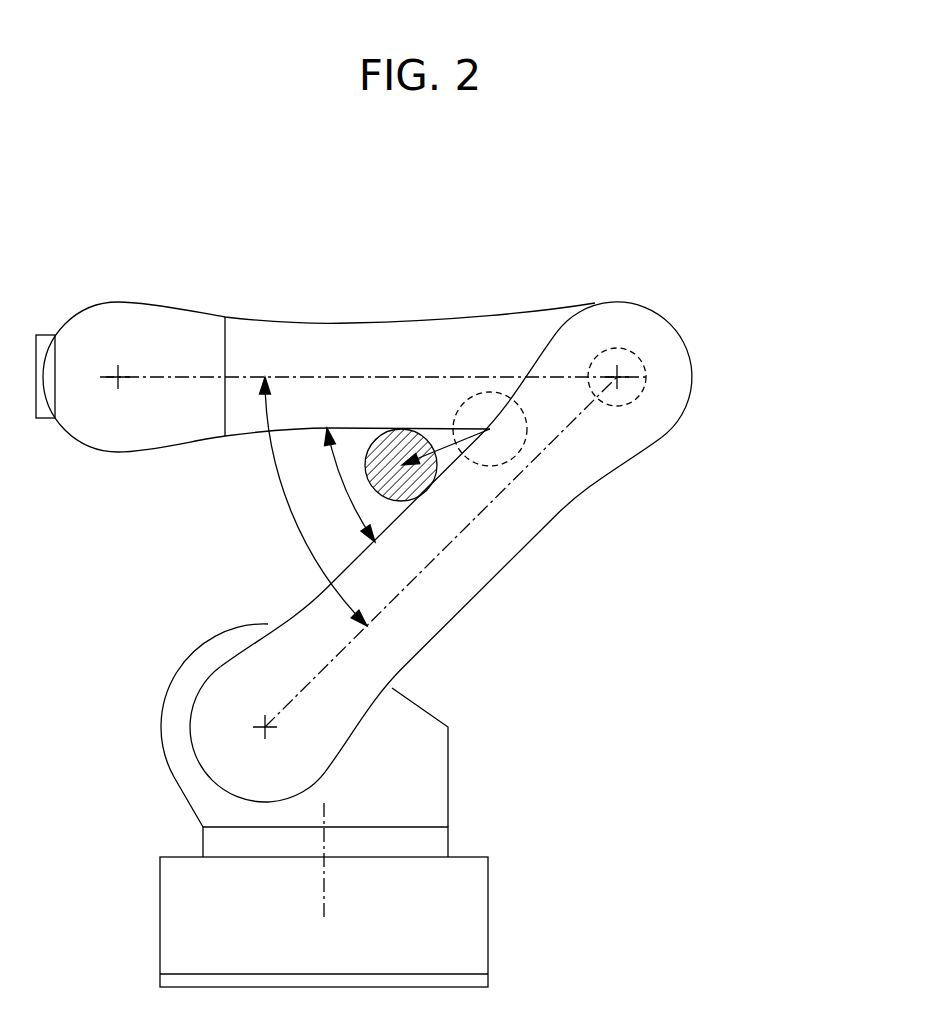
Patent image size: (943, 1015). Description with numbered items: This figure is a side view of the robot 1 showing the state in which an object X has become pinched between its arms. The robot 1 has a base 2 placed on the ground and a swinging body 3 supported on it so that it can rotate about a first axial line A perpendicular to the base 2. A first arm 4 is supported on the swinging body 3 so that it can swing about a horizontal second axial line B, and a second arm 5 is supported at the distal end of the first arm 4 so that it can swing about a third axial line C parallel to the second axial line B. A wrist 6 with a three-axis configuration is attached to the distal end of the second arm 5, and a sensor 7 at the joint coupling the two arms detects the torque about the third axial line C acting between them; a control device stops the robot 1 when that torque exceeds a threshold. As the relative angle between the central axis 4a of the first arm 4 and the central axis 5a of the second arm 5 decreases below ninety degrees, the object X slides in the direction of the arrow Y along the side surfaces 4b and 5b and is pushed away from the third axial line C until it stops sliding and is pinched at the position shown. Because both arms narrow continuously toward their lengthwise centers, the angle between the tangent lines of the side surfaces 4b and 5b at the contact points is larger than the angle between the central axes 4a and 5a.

The robot 1 is at (752, 300).
The base 2 is at (488, 913).
The swinging body 3 is at (448, 782).
The first arm 4 is at (441, 552).
The central axis of the first arm 4a is at (495, 497).
The side surface of the first arm 4b is at (391, 513).
The second arm 5 is at (343, 343).
The central axis of the second arm 5a is at (240, 375).
The side surface of the second arm 5b is at (285, 437).
The wrist 6 is at (136, 300).
The sensor 7 is at (616, 347).
The first axial line A is at (324, 888).
The second axial line B is at (262, 724).
The third axial line C is at (622, 374).
The object X is at (373, 432).
The arrow Y is at (438, 447).